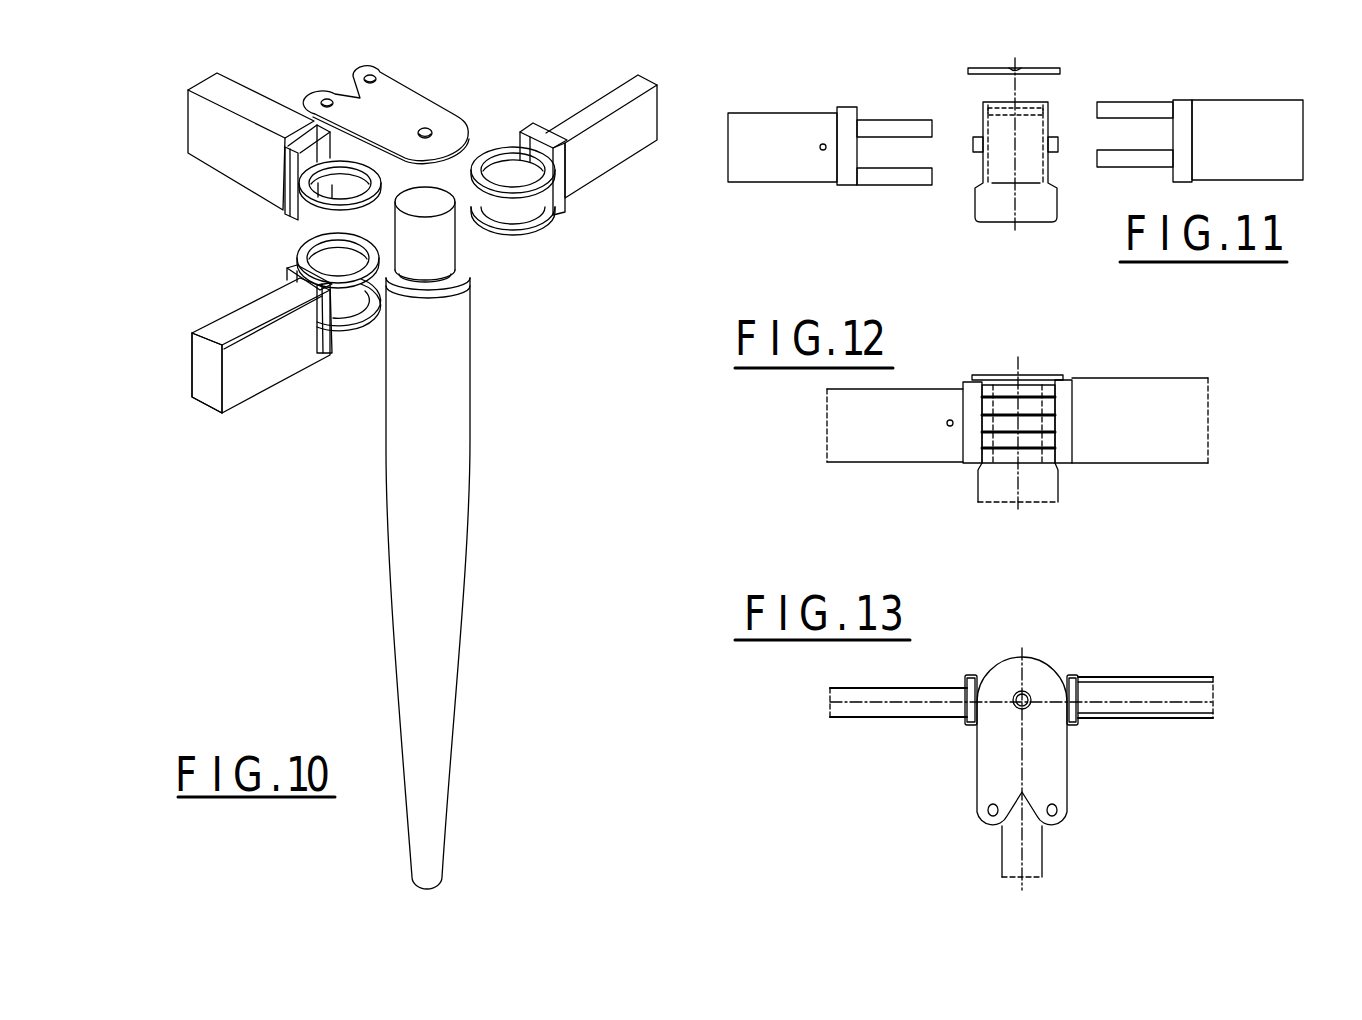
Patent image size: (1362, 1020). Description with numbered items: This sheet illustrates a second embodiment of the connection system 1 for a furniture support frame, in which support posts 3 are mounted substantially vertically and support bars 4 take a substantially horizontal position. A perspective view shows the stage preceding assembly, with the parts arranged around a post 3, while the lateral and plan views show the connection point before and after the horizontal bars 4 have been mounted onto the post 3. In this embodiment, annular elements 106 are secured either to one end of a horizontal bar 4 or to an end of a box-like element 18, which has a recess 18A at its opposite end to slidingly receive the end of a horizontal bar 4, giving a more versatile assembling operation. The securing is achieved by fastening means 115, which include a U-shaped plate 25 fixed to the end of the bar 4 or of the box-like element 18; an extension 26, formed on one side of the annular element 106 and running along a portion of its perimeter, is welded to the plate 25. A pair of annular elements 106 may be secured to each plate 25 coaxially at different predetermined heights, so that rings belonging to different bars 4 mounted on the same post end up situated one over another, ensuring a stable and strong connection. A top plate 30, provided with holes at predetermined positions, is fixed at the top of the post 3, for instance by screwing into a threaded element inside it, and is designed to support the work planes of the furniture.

In FIG. 13, the connection system 1 is at (1088, 733).
In FIG. 10, the support post 3 is at (481, 460).
In FIG. 13, the support bar 4 is at (1172, 667).
In FIG. 10, the box-like element 18 is at (229, 291).
In FIG. 11, the box-like element 18 is at (750, 191).
In FIG. 12, the box-like element 18 is at (871, 473).
In FIG. 10, the recess 18A is at (208, 362).
In FIG. 10, the U-shaped plate 25 is at (350, 300).
In FIG. 11, the U-shaped plate 25 is at (848, 178).
In FIG. 10, the extension 26 is at (308, 274).
In FIG. 10, the top plate 30 is at (447, 93).
In FIG. 11, the top plate 30 is at (1069, 57).
In FIG. 13, the top plate 30 is at (990, 767).
In FIG. 10, the annular element 106 is at (370, 312).
In FIG. 11, the annular element 106 is at (965, 126).
In FIG. 12, the annular element 106 is at (1029, 396).
In FIG. 10, the fastening means 115 is at (283, 242).